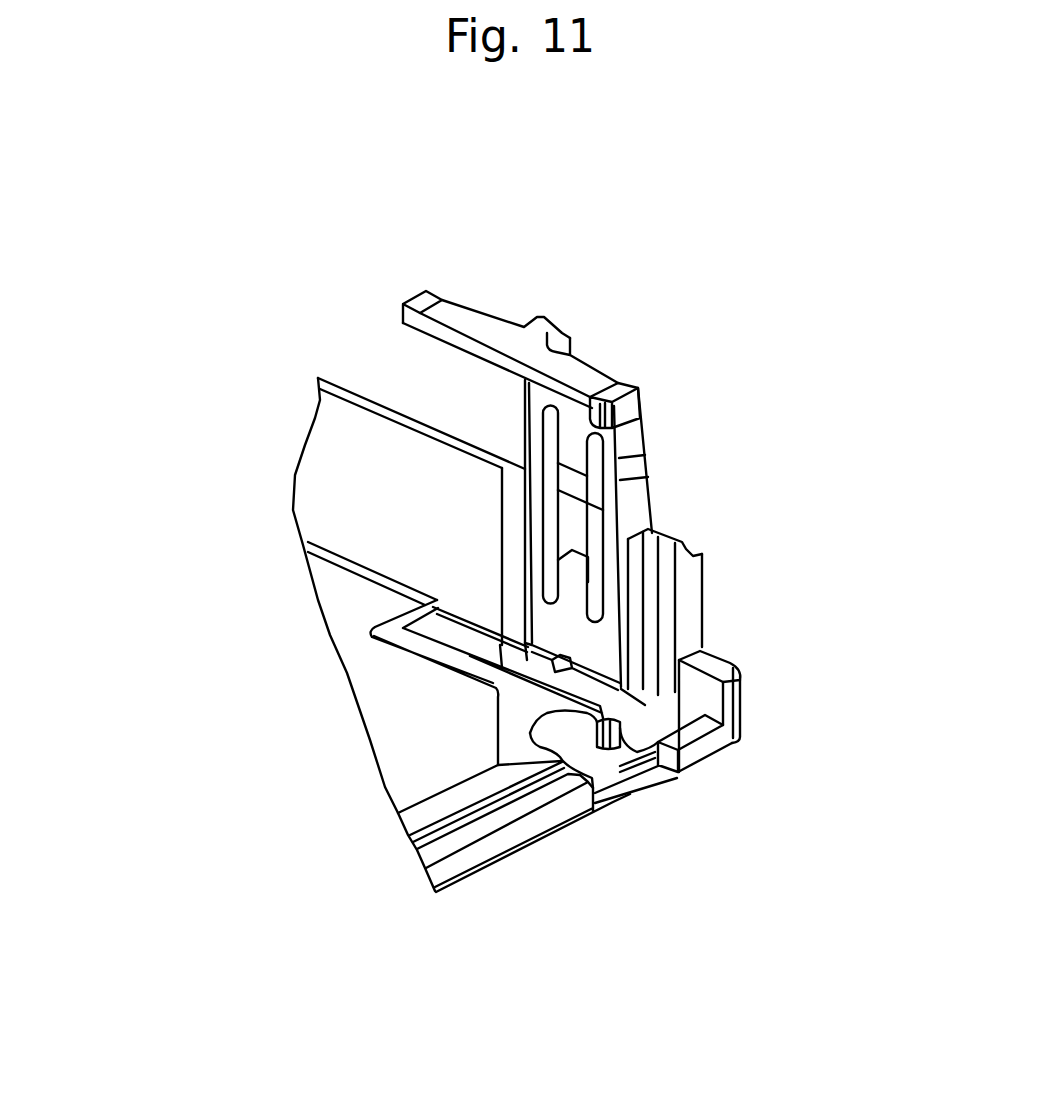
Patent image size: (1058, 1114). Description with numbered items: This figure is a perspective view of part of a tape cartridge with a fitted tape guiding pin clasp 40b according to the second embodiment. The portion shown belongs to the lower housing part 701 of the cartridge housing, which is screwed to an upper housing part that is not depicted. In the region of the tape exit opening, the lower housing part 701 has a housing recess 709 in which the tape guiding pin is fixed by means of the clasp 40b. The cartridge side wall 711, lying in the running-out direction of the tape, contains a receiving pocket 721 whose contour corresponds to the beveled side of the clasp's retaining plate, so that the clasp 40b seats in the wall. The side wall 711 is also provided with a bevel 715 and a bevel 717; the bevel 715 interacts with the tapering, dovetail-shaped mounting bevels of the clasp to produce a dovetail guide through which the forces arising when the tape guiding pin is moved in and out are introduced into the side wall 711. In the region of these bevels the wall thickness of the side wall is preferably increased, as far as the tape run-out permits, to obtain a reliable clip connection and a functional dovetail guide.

The tape guiding pin clasp 40b is at (532, 335).
The cartridge side wall 711 is at (373, 467).
The bevel 715 is at (525, 600).
The lower housing part 701 is at (430, 738).
The receiving pocket 721 is at (578, 528).
The bevel 717 is at (622, 634).
The housing recess 709 is at (610, 760).